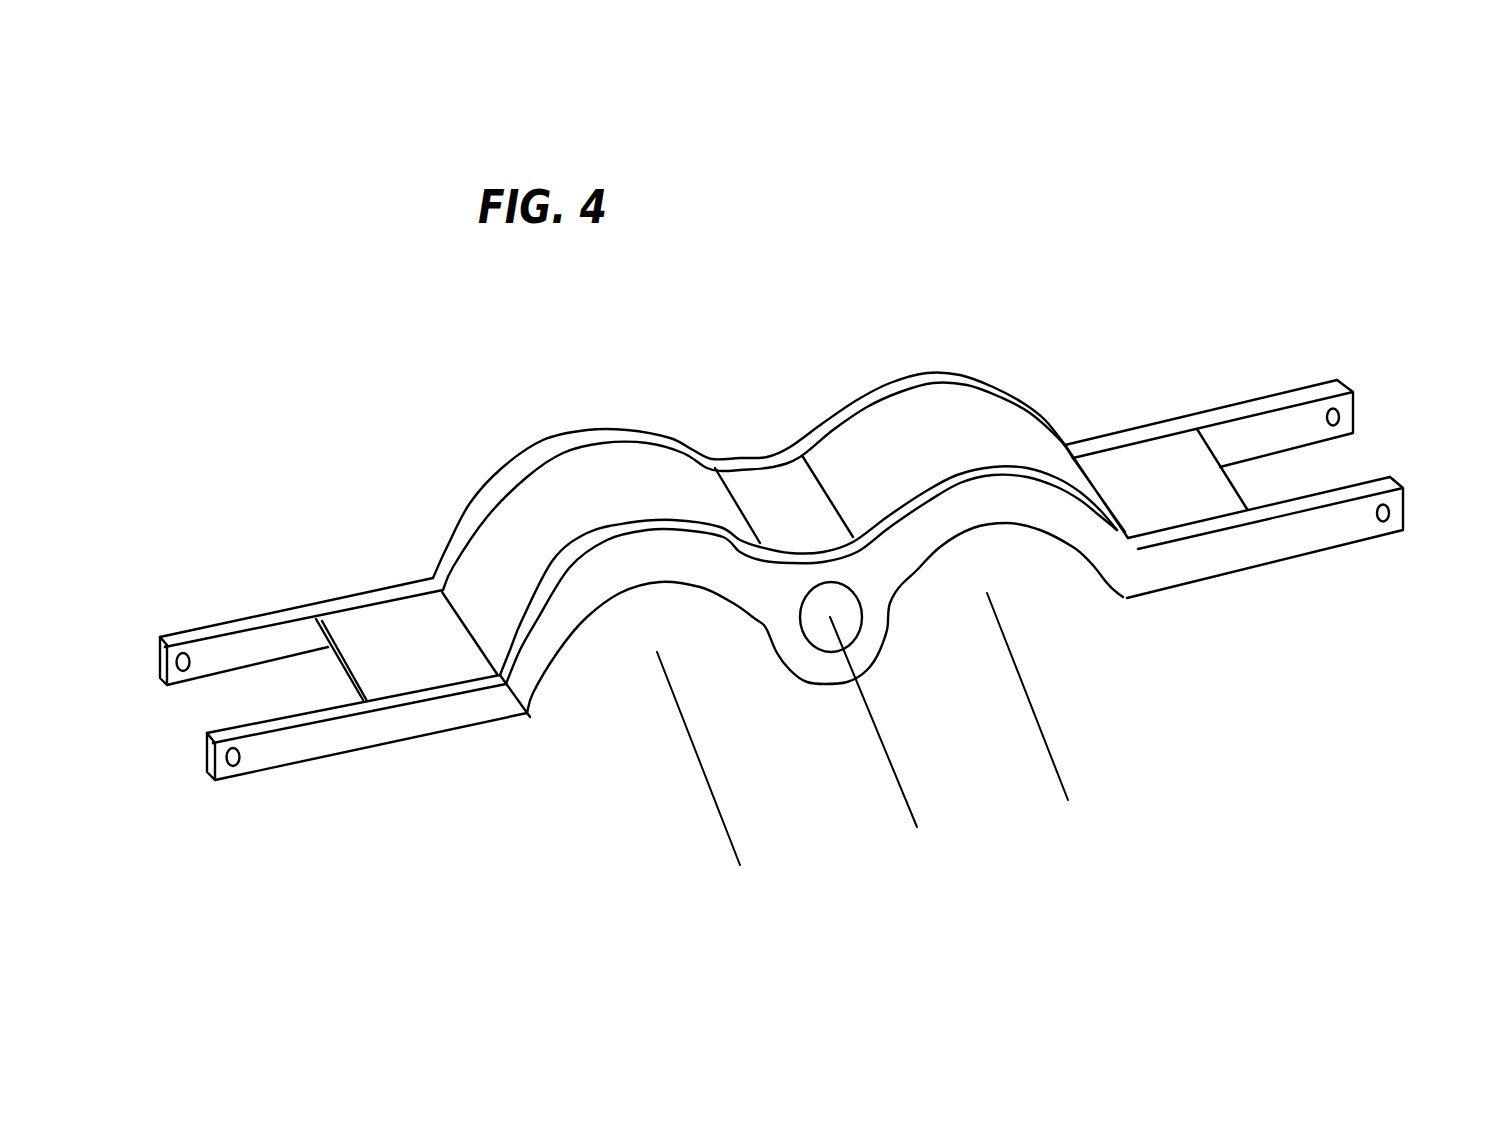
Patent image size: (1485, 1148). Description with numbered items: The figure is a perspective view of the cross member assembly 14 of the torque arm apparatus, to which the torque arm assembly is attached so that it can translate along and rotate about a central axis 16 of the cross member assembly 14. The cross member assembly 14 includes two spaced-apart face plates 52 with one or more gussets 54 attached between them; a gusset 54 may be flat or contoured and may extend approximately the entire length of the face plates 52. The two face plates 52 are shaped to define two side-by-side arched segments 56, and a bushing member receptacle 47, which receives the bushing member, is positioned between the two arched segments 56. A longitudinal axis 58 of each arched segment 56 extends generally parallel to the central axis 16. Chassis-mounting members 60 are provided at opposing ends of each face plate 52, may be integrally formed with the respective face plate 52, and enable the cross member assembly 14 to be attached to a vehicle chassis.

The cross member assembly 14 is at (923, 288).
The central axis 16 is at (907, 815).
The bushing member receptacle 47 is at (858, 628).
The face plates 52 is at (360, 595).
The gussets 54 is at (998, 443).
The arched segments 56 is at (607, 468).
The longitudinal axis 58 is at (718, 797).
The chassis-mounting members 60 is at (247, 633).